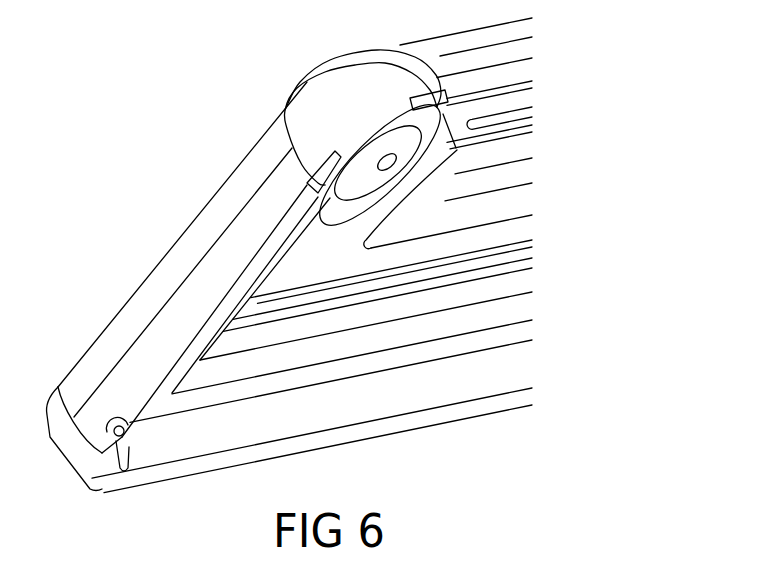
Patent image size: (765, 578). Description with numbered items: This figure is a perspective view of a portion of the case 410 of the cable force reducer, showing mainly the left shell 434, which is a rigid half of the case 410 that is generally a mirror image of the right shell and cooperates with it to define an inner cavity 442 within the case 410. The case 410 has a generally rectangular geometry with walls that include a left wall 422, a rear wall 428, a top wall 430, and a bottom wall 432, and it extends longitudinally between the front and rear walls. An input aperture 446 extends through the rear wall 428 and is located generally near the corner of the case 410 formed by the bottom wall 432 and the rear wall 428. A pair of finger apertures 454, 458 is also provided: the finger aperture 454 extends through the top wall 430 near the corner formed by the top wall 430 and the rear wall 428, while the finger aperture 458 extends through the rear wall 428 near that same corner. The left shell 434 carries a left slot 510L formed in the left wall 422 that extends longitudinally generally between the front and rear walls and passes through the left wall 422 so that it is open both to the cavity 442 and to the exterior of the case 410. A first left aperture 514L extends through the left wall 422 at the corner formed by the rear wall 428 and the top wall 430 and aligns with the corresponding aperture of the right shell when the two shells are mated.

The case 410 is at (148, 158).
The left wall 422 is at (503, 230).
The rear wall 428 is at (207, 280).
The top wall 430 is at (498, 70).
The bottom wall 432 is at (508, 375).
The left shell 434 is at (115, 313).
The inner cavity 442 is at (407, 357).
The input aperture 446 is at (133, 438).
The finger aperture 454 is at (437, 97).
The finger aperture 458 is at (308, 183).
The left slot 510L is at (503, 207).
The first left aperture 514L is at (400, 130).